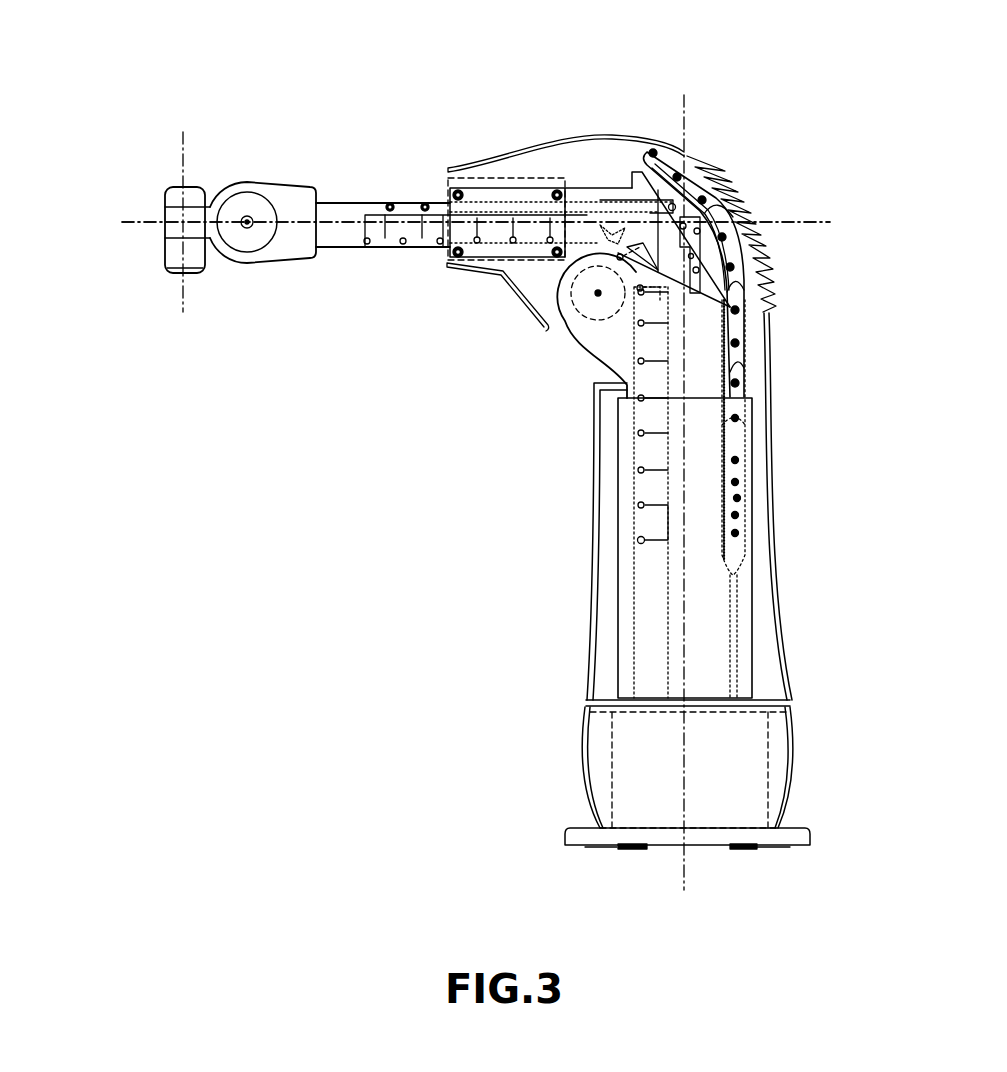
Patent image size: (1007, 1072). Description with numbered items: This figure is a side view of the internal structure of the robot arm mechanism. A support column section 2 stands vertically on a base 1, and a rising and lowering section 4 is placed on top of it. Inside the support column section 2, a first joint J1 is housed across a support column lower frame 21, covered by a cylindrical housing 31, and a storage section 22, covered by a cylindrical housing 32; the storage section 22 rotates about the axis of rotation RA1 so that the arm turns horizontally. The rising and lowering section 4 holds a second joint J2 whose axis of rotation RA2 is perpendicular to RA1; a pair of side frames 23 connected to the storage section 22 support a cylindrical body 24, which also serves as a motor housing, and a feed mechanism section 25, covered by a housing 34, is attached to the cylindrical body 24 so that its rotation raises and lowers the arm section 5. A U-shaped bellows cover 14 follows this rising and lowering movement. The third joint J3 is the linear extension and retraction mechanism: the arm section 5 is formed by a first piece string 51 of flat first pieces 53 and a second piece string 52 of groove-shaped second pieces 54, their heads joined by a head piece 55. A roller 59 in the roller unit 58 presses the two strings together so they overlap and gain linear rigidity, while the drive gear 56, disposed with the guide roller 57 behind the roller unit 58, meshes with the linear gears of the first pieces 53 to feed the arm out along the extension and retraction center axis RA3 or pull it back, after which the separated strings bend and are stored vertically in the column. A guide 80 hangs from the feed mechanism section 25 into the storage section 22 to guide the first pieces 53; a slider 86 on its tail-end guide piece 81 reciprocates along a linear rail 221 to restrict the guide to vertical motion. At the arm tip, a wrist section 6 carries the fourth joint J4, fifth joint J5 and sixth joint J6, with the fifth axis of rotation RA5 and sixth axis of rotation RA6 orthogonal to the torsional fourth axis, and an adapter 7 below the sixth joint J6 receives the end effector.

The base 1 is at (806, 831).
The support column section 2 is at (791, 542).
The rising and lowering section 4 is at (750, 181).
The arm section 5 is at (418, 196).
The wrist section 6 is at (266, 166).
The adapter 7 is at (198, 278).
The U-shaped bellows cover 14 is at (778, 258).
The support column lower frame 21 is at (612, 722).
The storage section 22 is at (594, 404).
The side frames 23 is at (587, 360).
The cylindrical body 24 is at (572, 322).
The feed mechanism section 25 is at (506, 273).
The cylindrical housing 31 is at (587, 775).
The cylindrical housing 32 is at (596, 637).
The housing 34 is at (519, 160).
The first piece string 51 is at (690, 478).
The second piece string 52 is at (650, 560).
The first pieces 53 is at (635, 443).
The second pieces 54 is at (640, 517).
The head piece 55 is at (345, 248).
The drive gear 56 is at (612, 235).
The guide roller 57 is at (643, 205).
The roller unit 58 is at (540, 190).
The roller 59 is at (460, 192).
The guide 80 is at (757, 388).
The guide piece 81 is at (753, 318).
The slider 86 is at (740, 507).
The linear rail 221 is at (732, 588).
The axis of rotation RA1 is at (682, 480).
The axis of rotation RA2 is at (570, 314).
The extension and retraction center axis RA3 is at (441, 226).
The fifth axis of rotation RA5 is at (251, 229).
The sixth axis of rotation RA6 is at (180, 211).
The first joint J1 is at (807, 712).
The second joint J2 is at (598, 293).
The third joint J3 is at (444, 258).
The fourth joint J4 is at (320, 195).
The fifth joint J5 is at (238, 262).
The sixth joint J6 is at (163, 283).